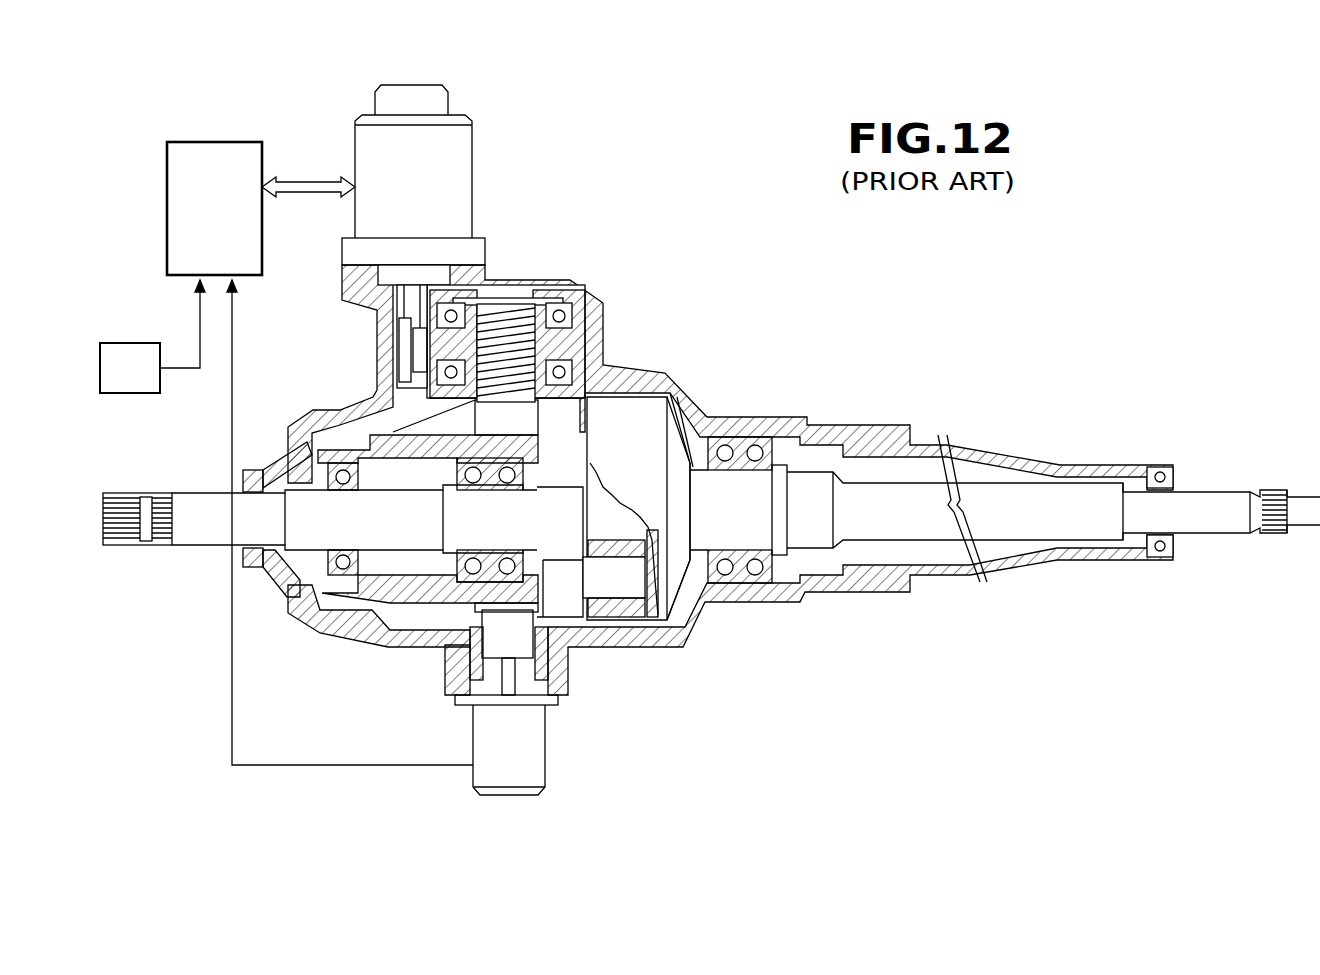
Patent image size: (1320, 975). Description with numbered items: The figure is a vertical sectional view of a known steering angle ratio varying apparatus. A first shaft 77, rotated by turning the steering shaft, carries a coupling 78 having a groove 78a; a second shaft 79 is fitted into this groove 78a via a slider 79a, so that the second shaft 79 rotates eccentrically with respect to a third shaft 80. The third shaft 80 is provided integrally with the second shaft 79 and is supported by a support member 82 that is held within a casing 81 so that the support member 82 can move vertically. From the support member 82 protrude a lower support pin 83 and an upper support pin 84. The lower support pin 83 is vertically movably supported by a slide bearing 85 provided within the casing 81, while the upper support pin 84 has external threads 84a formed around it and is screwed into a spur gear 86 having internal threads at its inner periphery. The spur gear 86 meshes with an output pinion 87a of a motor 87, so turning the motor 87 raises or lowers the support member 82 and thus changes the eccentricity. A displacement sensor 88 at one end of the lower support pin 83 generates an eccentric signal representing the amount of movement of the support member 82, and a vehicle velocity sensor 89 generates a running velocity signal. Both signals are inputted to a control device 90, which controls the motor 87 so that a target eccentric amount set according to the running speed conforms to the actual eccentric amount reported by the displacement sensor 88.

The first shaft 77 is at (890, 510).
The coupling 78 is at (640, 435).
The groove 78a is at (610, 520).
The second shaft 79 is at (695, 620).
The slider 79a is at (628, 612).
The third shaft 80 is at (200, 525).
The casing 81 is at (372, 635).
The support member 82 is at (348, 450).
The lower support pin 83 is at (508, 668).
The upper support pin 84 is at (525, 405).
The external threads 84a is at (500, 325).
The slide bearing 85 is at (508, 636).
The spur gear 86 is at (602, 298).
The motor 87 is at (455, 173).
The output pinion 87a is at (417, 342).
The displacement sensor 88 is at (530, 760).
The vehicle velocity sensor 89 is at (125, 343).
The control device 90 is at (212, 165).